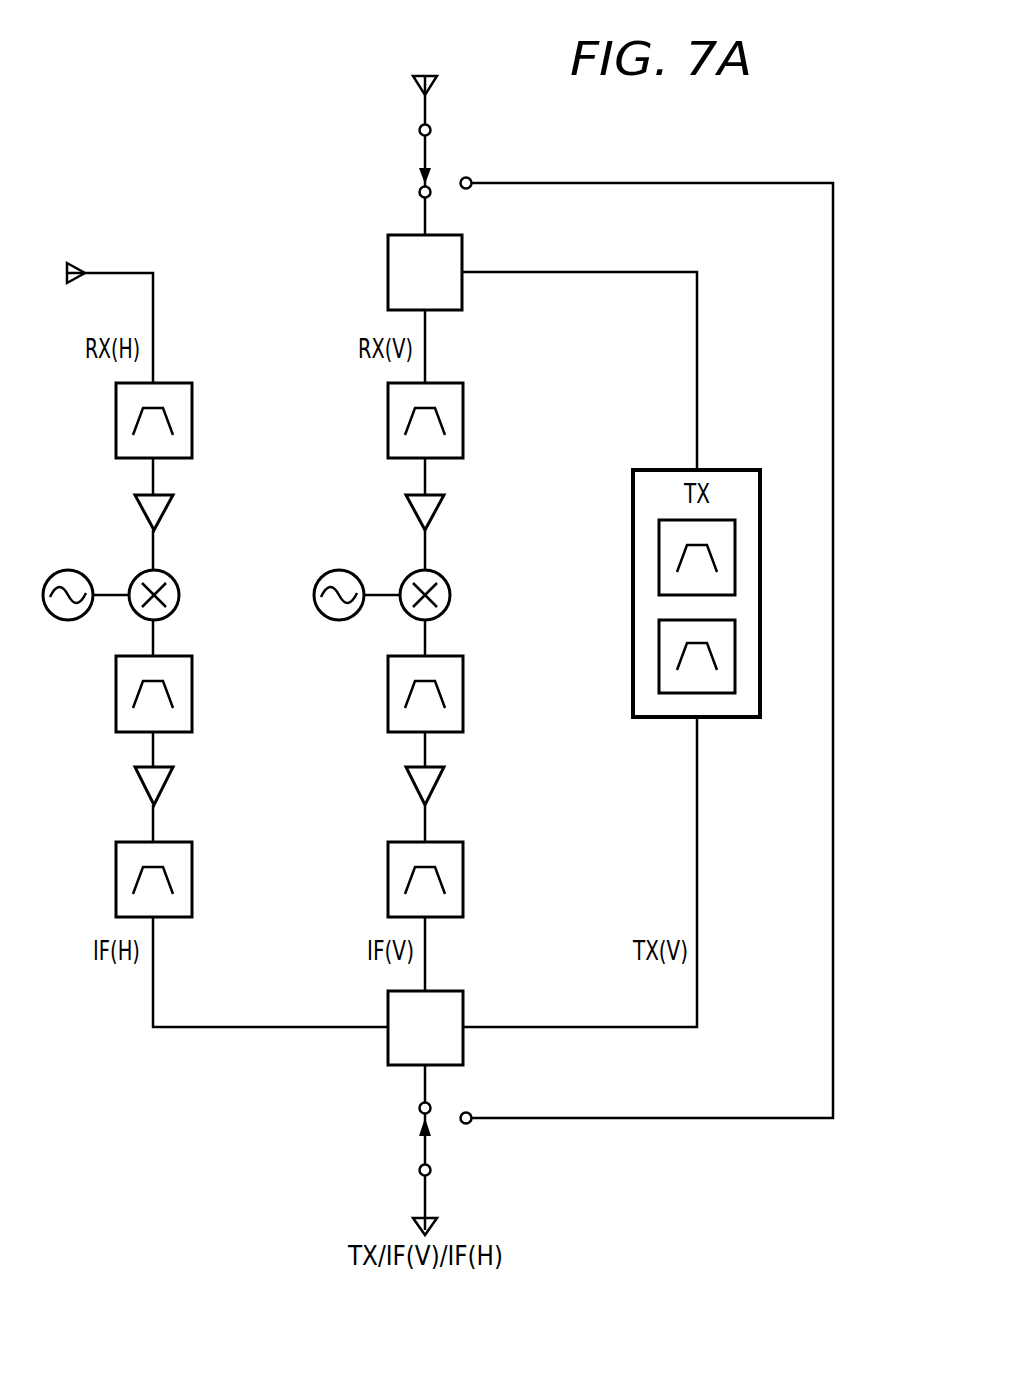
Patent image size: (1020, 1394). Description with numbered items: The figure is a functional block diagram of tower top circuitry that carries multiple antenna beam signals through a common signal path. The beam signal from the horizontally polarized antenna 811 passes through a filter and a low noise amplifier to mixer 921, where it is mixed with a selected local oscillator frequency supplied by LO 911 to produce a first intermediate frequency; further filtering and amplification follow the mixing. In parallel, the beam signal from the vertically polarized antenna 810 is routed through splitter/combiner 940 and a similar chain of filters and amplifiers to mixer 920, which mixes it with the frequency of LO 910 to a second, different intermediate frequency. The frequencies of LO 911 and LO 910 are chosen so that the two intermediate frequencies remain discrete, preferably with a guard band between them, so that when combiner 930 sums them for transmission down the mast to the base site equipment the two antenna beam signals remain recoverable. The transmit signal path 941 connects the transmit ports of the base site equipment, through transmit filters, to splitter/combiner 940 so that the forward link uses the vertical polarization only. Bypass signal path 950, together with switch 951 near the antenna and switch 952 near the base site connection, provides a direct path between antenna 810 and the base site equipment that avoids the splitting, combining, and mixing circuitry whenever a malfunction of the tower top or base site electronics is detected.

The antenna 810 is at (420, 72).
The antenna 811 is at (80, 265).
The switch 951 is at (422, 158).
The splitter/combiner 940 is at (388, 272).
The transmit signal path 941 is at (697, 363).
The bypass signal path 950 is at (833, 648).
The mixer 921 is at (180, 597).
The mixer 920 is at (451, 597).
The local oscillator 911 is at (67, 622).
The local oscillator 910 is at (339, 622).
The combiner 930 is at (388, 1045).
The switch 952 is at (422, 1142).